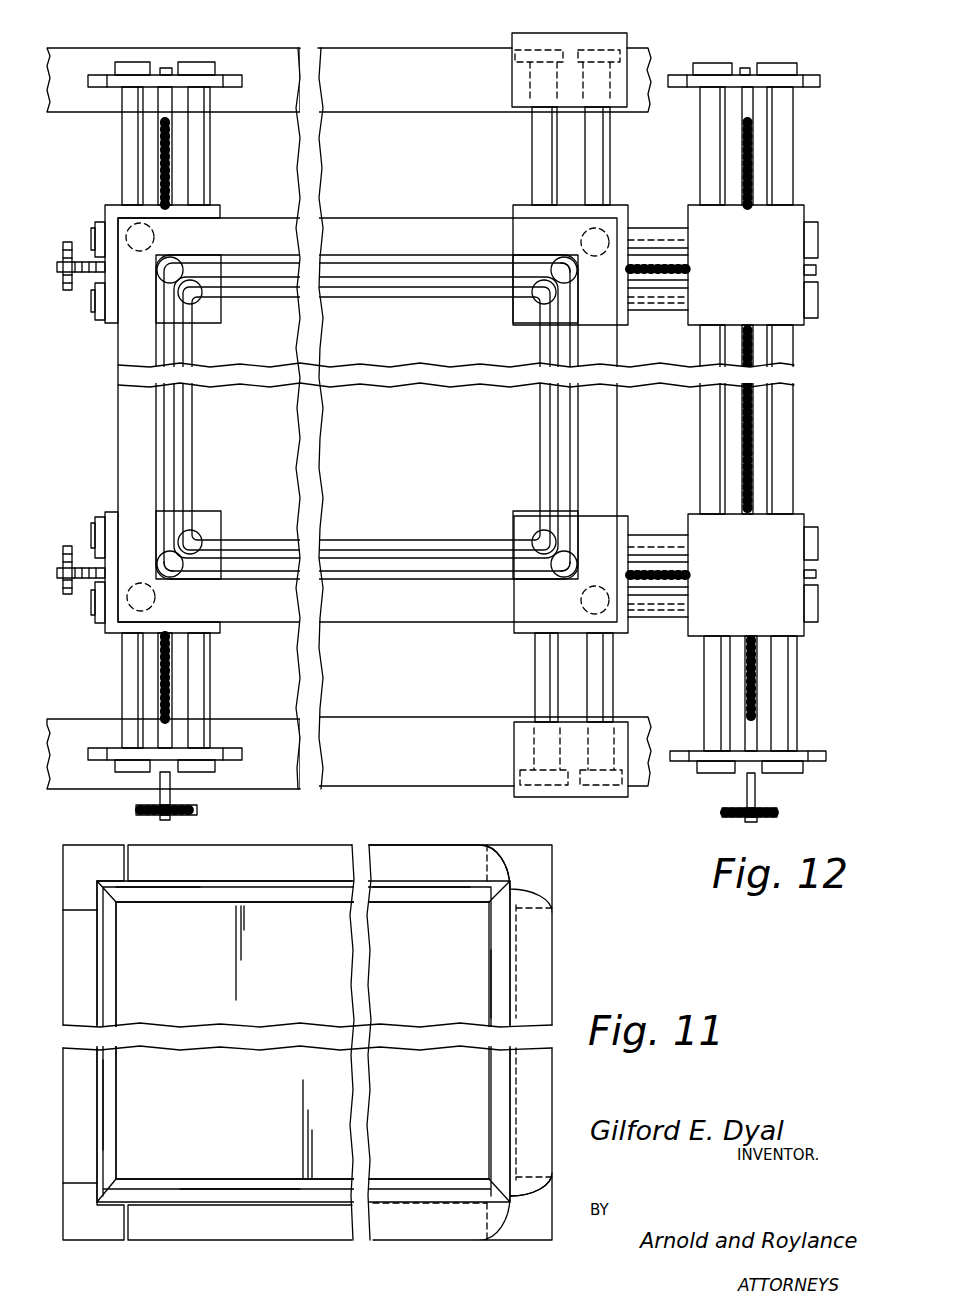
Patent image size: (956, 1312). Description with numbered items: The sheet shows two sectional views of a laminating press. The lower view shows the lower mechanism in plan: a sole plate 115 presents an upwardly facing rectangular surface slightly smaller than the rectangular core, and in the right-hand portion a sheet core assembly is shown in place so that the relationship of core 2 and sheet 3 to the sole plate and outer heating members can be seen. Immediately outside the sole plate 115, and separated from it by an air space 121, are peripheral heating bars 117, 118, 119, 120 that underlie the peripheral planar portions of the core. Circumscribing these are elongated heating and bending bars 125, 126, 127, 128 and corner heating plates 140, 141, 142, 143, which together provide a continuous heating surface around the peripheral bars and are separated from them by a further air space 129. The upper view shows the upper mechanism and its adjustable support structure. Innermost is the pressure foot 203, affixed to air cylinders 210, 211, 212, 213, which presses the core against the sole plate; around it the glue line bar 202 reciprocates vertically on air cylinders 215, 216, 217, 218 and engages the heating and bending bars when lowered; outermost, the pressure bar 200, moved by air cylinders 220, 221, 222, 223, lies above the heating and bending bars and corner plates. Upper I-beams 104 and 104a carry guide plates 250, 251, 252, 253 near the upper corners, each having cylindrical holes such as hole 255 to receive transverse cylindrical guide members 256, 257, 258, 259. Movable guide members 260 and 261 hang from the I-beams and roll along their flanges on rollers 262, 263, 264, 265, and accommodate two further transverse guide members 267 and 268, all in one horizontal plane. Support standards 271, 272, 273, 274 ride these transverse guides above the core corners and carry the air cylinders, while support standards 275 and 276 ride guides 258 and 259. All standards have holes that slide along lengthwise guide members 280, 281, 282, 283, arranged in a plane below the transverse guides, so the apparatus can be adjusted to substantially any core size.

In FIG. 12, the upper I-beam 104 is at (358, 735).
In FIG. 12, the upper I-beam 104a is at (414, 52).
In FIG. 12, the pressure bar 200 is at (605, 426).
In FIG. 12, the glue line bar 202 is at (558, 414).
In FIG. 12, the pressure foot 203 is at (538, 440).
In FIG. 12, the air cylinder 210 is at (208, 530).
In FIG. 12, the air cylinder 211 is at (196, 312).
In FIG. 12, the air cylinder 212 is at (525, 300).
In FIG. 12, the air cylinder 213 is at (530, 535).
In FIG. 12, the air cylinder 215 is at (173, 580).
In FIG. 12, the air cylinder 216 is at (160, 273).
In FIG. 12, the air cylinder 217 is at (555, 262).
In FIG. 12, the air cylinder 218 is at (560, 580).
In FIG. 12, the air cylinder 220 is at (122, 607).
In FIG. 12, the air cylinder 221 is at (156, 238).
In FIG. 12, the air cylinder 222 is at (580, 240).
In FIG. 12, the air cylinder 223 is at (612, 633).
In FIG. 12, the guide plate 250 is at (115, 750).
In FIG. 12, the guide plate 251 is at (234, 78).
In FIG. 12, the guide plate 252 is at (823, 80).
In FIG. 12, the guide plate 253 is at (828, 757).
In FIG. 12, the cylindrical hole 255 is at (205, 772).
In FIG. 12, the transverse cylindrical guide member 256 is at (125, 660).
In FIG. 12, the transverse cylindrical guide member 257 is at (203, 676).
In FIG. 12, the transverse cylindrical guide member 258 is at (703, 678).
In FIG. 12, the transverse cylindrical guide member 259 is at (778, 693).
In FIG. 12, the movable guide member 260 is at (575, 797).
In FIG. 12, the movable guide member 261 is at (598, 33).
In FIG. 12, the roller 262 is at (515, 768).
In FIG. 12, the roller 263 is at (603, 804).
In FIG. 12, the roller 264 is at (518, 64).
In FIG. 12, the roller 265 is at (580, 47).
In FIG. 12, the transverse cylindrical guide member 267 is at (535, 690).
In FIG. 12, the transverse cylindrical guide member 268 is at (620, 710).
In FIG. 12, the support standard 271 is at (108, 512).
In FIG. 12, the support standard 272 is at (105, 210).
In FIG. 12, the support standard 273 is at (630, 206).
In FIG. 12, the support standard 274 is at (626, 515).
In FIG. 12, the support standard 275 is at (763, 284).
In FIG. 12, the support standard 276 is at (763, 566).
In FIG. 12, the lengthwise guide member 280 is at (662, 617).
In FIG. 12, the lengthwise guide member 281 is at (655, 532).
In FIG. 12, the lengthwise guide member 282 is at (665, 302).
In FIG. 12, the lengthwise guide member 283 is at (650, 235).
In FIG. 11, the core 2 is at (408, 905).
In FIG. 11, the sheet 3 is at (425, 855).
In FIG. 11, the sole plate 115 is at (205, 997).
In FIG. 11, the peripheral heating bar 117 is at (108, 1101).
In FIG. 11, the peripheral heating bar 118 is at (163, 895).
In FIG. 11, the peripheral heating bar 119 is at (495, 990).
In FIG. 11, the peripheral heating bar 120 is at (228, 1195).
In FIG. 11, the air space 121 is at (272, 902).
In FIG. 11, the heating and bending bar 125 is at (70, 1107).
In FIG. 11, the heating and bending bar 126 is at (222, 870).
In FIG. 11, the heating and bending bar 127 is at (555, 950).
In FIG. 11, the heating and bending bar 128 is at (274, 1225).
In FIG. 11, the air space 129 is at (295, 885).
In FIG. 11, the corner heating plate 140 is at (94, 1225).
In FIG. 11, the corner heating plate 141 is at (91, 853).
In FIG. 11, the corner heating plate 142 is at (514, 855).
In FIG. 11, the corner heating plate 143 is at (535, 1228).